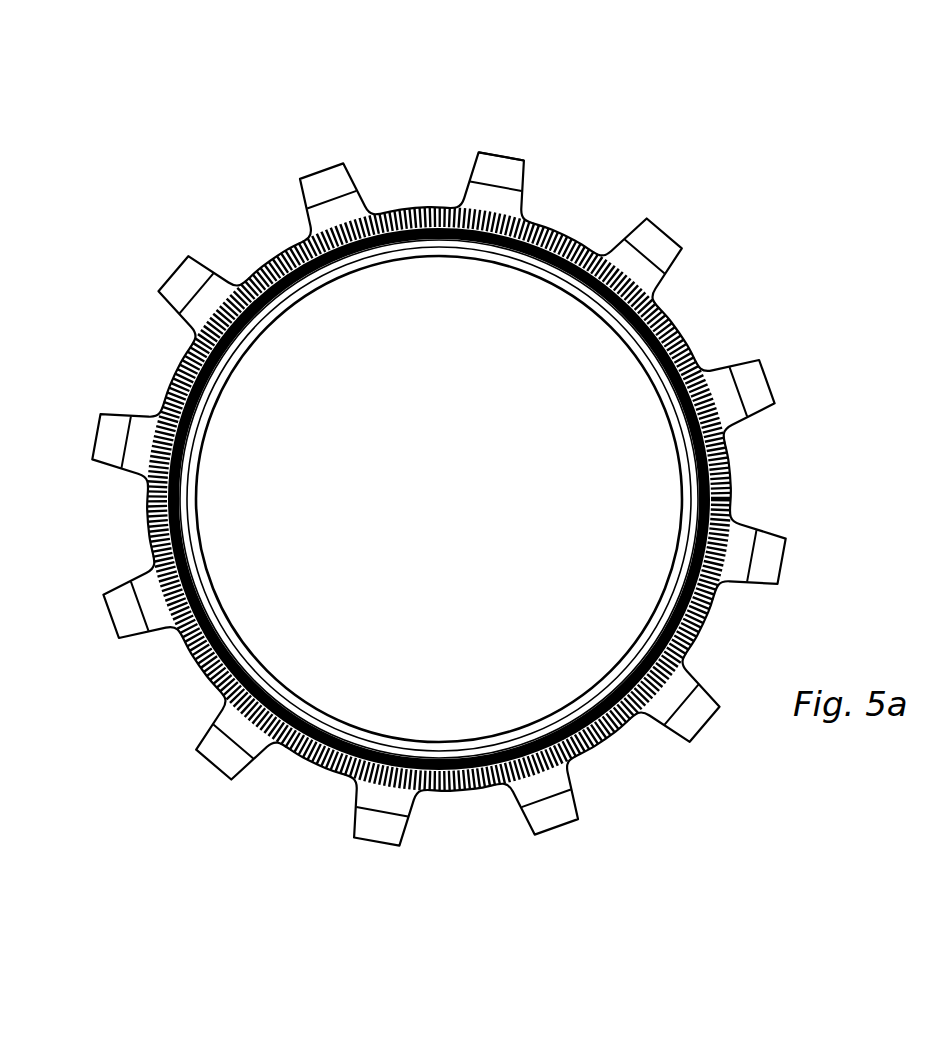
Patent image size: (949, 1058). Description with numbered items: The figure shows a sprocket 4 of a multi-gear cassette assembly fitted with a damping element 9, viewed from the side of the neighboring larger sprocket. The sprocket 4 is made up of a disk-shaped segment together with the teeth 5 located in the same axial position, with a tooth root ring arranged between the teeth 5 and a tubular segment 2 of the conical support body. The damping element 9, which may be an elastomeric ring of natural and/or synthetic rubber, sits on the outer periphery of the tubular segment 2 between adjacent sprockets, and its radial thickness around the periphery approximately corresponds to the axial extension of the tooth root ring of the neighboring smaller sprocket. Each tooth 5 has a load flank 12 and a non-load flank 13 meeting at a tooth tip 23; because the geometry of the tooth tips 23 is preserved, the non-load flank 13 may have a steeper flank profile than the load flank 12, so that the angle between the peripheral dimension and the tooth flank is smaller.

The sprocket 4 is at (768, 262).
The tubular segment 2 is at (300, 238).
The damping element 9 is at (173, 387).
The tooth 5 is at (195, 292).
The load flank 12 is at (513, 177).
The tooth tip 23 is at (490, 157).
The non-load flank 13 is at (748, 365).